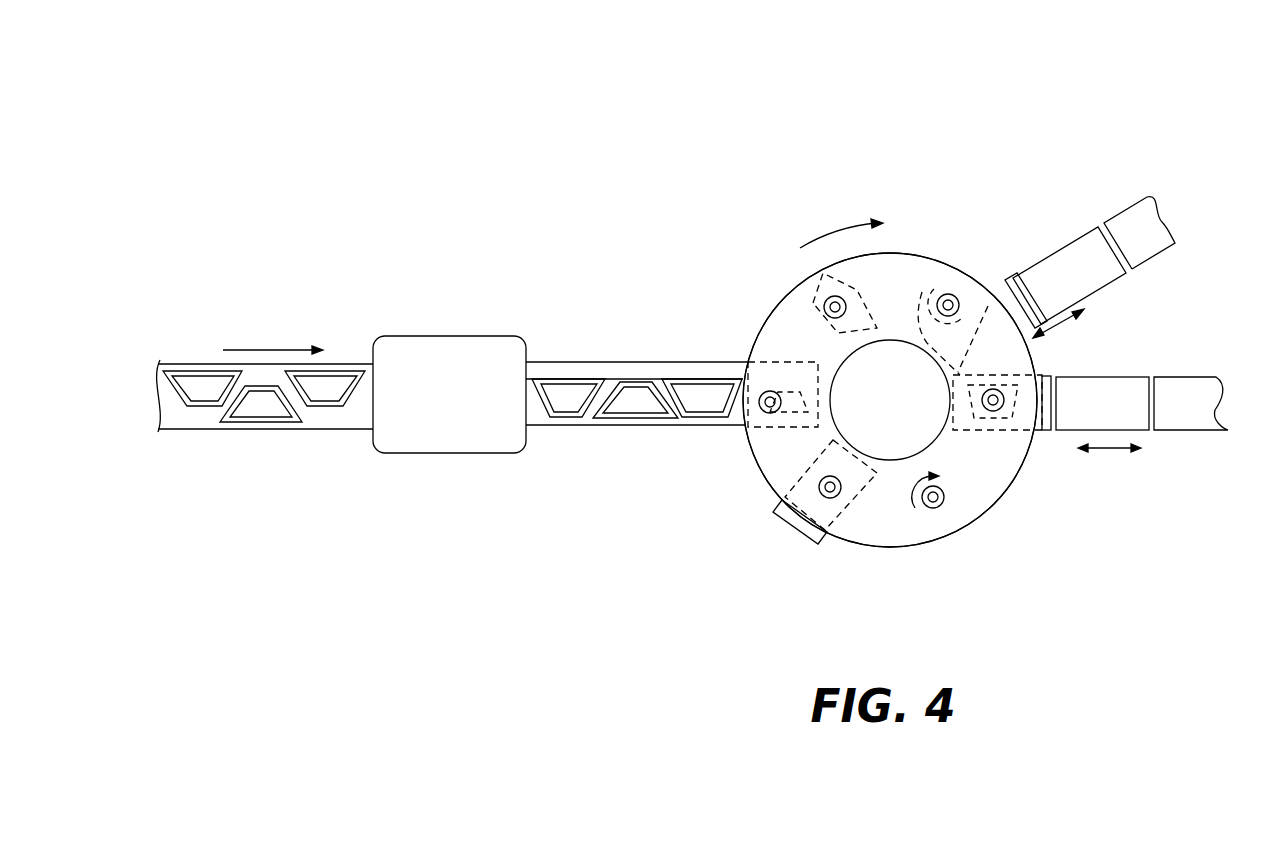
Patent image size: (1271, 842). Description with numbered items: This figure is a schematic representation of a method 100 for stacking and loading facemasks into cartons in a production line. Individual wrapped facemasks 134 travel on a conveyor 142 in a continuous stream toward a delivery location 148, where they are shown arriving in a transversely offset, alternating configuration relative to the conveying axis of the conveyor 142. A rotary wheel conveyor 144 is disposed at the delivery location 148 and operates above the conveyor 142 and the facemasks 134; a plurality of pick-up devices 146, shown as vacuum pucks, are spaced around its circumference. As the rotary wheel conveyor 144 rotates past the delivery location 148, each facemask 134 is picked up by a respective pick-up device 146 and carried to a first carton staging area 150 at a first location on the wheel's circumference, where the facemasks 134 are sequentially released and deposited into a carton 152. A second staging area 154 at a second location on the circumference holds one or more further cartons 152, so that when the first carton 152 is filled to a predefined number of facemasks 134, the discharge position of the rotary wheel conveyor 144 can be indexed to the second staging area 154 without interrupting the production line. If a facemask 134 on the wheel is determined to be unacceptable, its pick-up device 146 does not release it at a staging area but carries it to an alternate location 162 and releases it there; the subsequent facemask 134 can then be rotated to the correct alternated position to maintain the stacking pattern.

The method 100 is at (918, 150).
The wrapped facemask 134 is at (254, 410).
The conveyor 142 is at (335, 424).
The rotary wheel conveyor 144 is at (878, 548).
The pick-up device 146 is at (446, 335).
The delivery location 148 is at (738, 336).
The first carton staging area 150 is at (1062, 456).
The carton 152 is at (973, 365).
The second staging area 154 is at (1006, 250).
The alternate location 162 is at (760, 507).